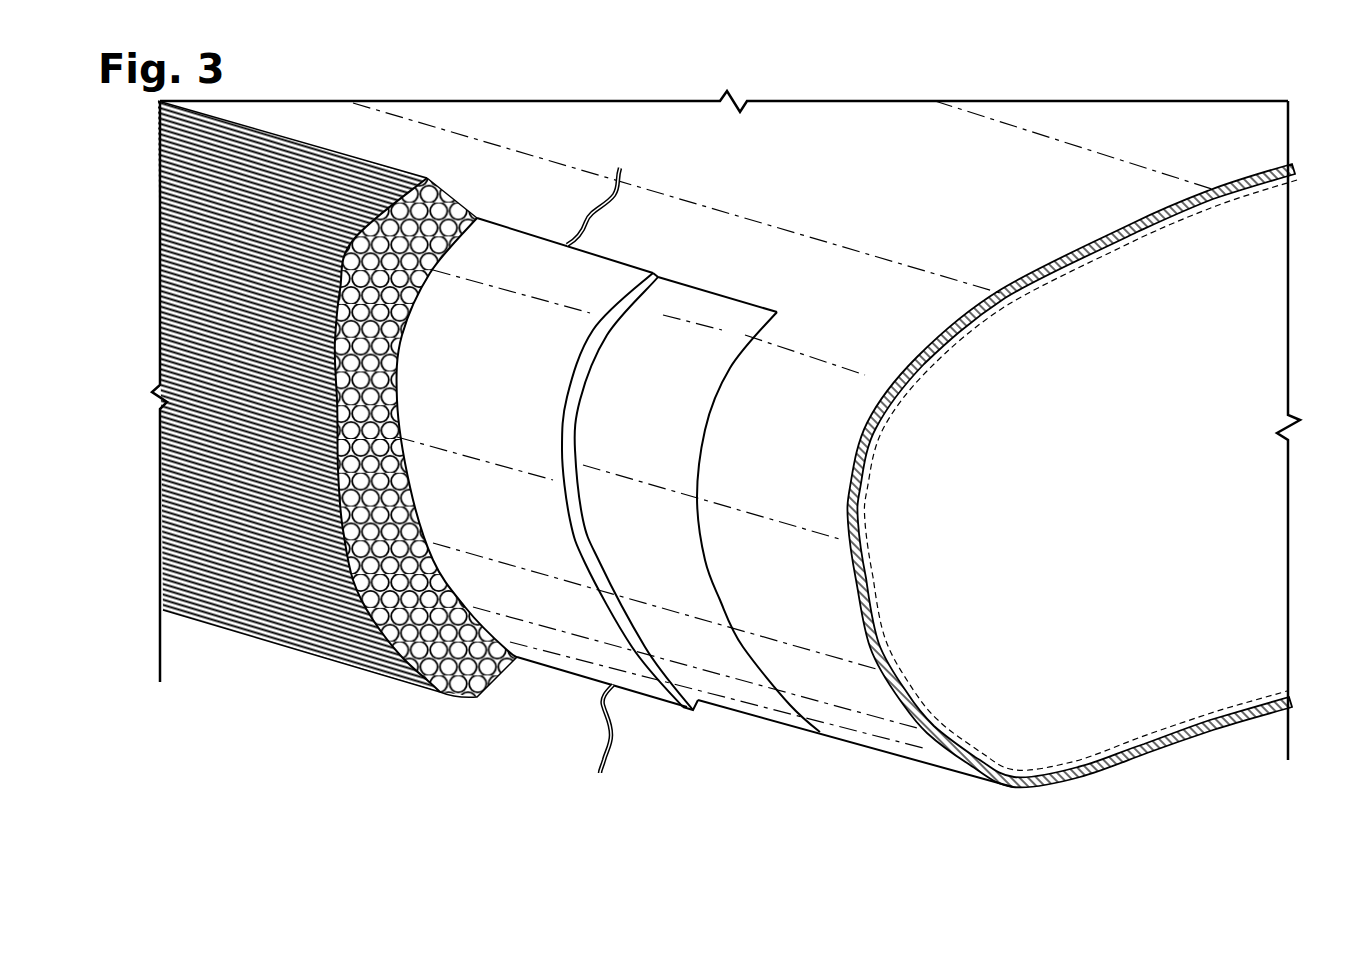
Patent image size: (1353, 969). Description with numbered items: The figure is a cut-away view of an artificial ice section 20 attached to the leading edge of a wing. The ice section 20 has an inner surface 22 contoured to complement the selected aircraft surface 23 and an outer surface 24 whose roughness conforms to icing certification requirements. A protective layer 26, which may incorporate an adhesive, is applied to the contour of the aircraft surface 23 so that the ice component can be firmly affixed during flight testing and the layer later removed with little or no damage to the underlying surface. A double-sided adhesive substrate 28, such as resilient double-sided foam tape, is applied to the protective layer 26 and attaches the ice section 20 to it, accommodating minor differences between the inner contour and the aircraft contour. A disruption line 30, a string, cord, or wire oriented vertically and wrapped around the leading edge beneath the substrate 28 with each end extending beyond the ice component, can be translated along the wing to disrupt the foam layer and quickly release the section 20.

The artificial ice section 20 is at (341, 690).
The inner surface 22 is at (418, 300).
The aircraft surface 23 is at (855, 715).
The outer surface 24 is at (267, 625).
The protective layer 26 is at (713, 307).
The double-sided adhesive substrate 28 is at (607, 263).
The disruption line 30 is at (622, 172).